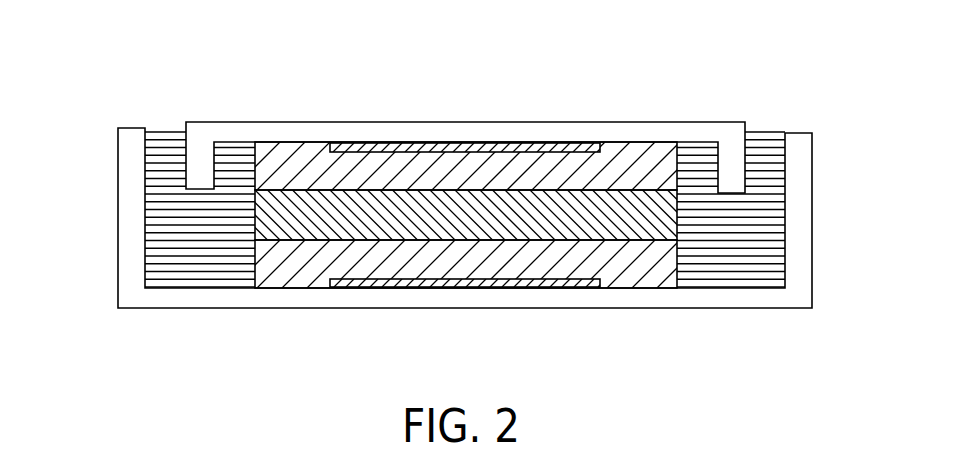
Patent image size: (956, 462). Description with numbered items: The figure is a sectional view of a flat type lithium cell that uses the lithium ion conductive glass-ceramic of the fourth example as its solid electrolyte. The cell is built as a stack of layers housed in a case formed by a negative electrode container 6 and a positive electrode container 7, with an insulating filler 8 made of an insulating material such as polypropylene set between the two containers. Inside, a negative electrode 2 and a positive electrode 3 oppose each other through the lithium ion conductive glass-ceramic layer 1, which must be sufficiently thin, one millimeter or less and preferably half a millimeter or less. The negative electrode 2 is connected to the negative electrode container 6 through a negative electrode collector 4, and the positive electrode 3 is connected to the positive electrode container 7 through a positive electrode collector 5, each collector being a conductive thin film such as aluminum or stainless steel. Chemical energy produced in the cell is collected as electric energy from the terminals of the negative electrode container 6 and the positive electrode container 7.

The lithium ion conductive glass-ceramic layer 1 is at (612, 217).
The negative electrode 2 is at (520, 168).
The positive electrode 3 is at (310, 260).
The negative electrode collector 4 is at (393, 142).
The positive electrode collector 5 is at (458, 285).
The negative electrode container 6 is at (212, 132).
The positive electrode container 7 is at (530, 302).
The insulating filler 8 is at (763, 147).